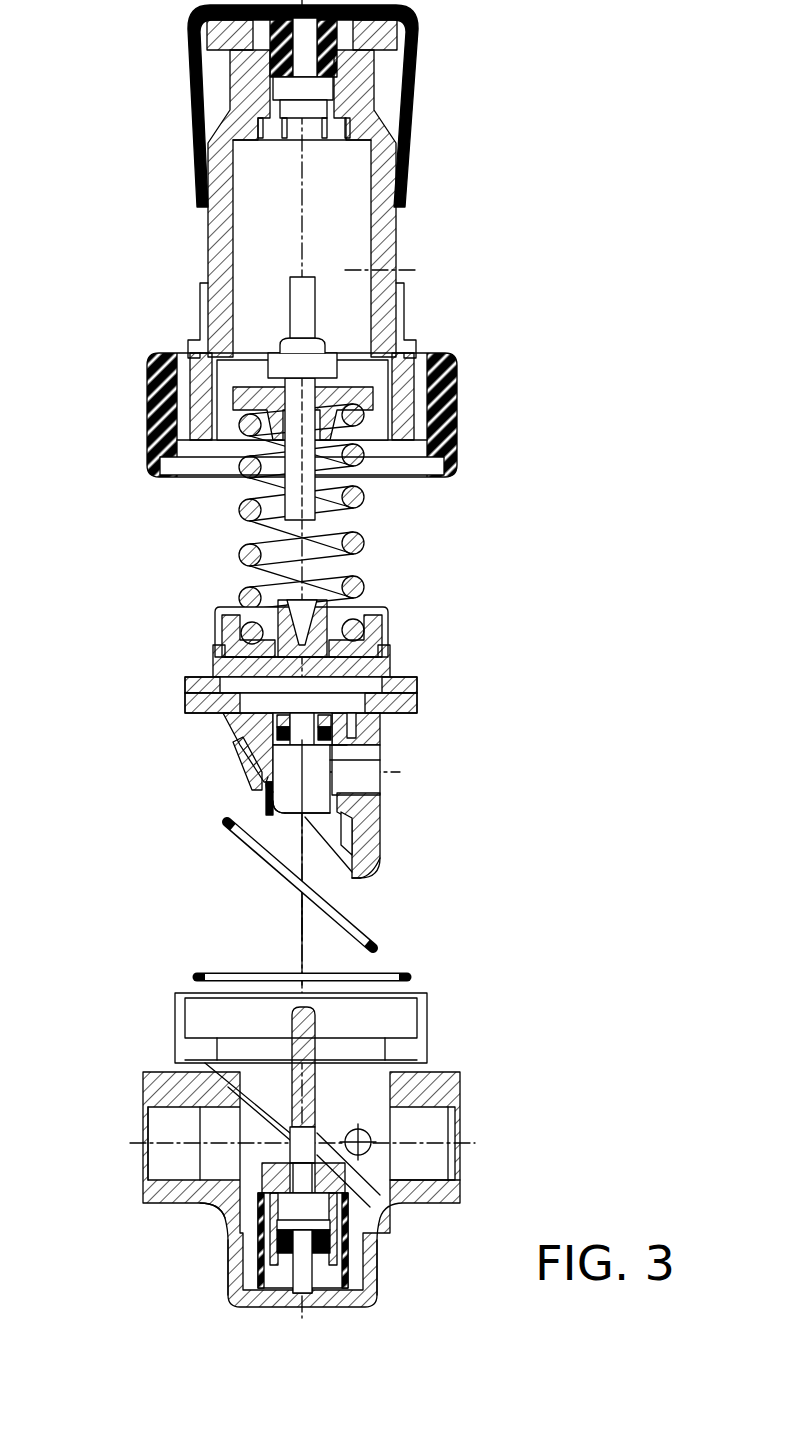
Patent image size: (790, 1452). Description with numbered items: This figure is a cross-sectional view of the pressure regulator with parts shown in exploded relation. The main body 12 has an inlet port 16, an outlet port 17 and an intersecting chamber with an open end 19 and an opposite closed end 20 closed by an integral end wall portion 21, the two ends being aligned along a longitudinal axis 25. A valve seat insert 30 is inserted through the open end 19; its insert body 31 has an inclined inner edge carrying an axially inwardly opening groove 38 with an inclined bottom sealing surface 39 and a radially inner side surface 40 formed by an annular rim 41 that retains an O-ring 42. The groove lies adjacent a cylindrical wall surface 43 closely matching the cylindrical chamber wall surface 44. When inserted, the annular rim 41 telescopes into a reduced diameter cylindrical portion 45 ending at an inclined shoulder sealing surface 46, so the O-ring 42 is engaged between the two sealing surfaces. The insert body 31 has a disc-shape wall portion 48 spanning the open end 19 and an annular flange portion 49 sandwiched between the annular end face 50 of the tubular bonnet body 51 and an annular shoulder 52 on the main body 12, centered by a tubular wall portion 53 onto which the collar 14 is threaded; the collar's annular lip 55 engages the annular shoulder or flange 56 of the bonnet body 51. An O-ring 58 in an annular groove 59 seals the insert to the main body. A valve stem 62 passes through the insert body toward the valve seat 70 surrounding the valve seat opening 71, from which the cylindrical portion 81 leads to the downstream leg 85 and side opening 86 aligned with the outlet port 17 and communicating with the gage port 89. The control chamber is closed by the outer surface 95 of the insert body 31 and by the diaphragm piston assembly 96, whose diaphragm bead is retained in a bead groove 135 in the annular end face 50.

The main body 12 is at (140, 1080).
The collar 14 is at (458, 400).
The inlet port 16 is at (157, 1128).
The outlet port 17 is at (445, 1123).
The open end 19 is at (420, 975).
The closed end 20 is at (240, 1258).
The integral end wall portion 21 is at (277, 1302).
The longitudinal axis 25 is at (298, 920).
The valve seat insert 30 is at (430, 705).
The insert body 31 is at (220, 717).
The axially inwardly opening groove 38 is at (248, 764).
The inclined bottom sealing surface 39 is at (380, 870).
The radially inner side surface 40 is at (363, 872).
The annular rim 41 is at (250, 758).
The O-ring 42 is at (235, 840).
The cylindrical wall surface 43 is at (385, 805).
The cylindrical chamber wall surface 44 is at (292, 1040).
The reduced diameter cylindrical portion 45 is at (230, 1213).
The inclined shoulder sealing surface 46 is at (440, 1188).
The disc-shape wall portion 48 is at (380, 727).
The annular flange portion 49 is at (420, 697).
The annular end face 50 is at (185, 468).
The tubular bonnet body 51 is at (207, 246).
The annular shoulder 52 is at (427, 1008).
The tubular wall portion 53 is at (425, 1030).
The annular lip 55 is at (190, 348).
The annular shoulder or flange 56 is at (150, 388).
The O-ring 58 is at (197, 975).
The annular groove 59 is at (225, 1068).
The valve stem 62 is at (290, 1020).
The valve seat 70 is at (285, 818).
The valve seat opening 71 is at (294, 826).
The cylindrical portion 81 is at (285, 815).
The downstream leg 85 is at (385, 790).
The side opening 86 is at (385, 803).
The gage port 89 is at (400, 1153).
The outer surface 95 is at (215, 660).
The diaphragm piston assembly 96 is at (388, 608).
The bead groove 135 is at (400, 445).